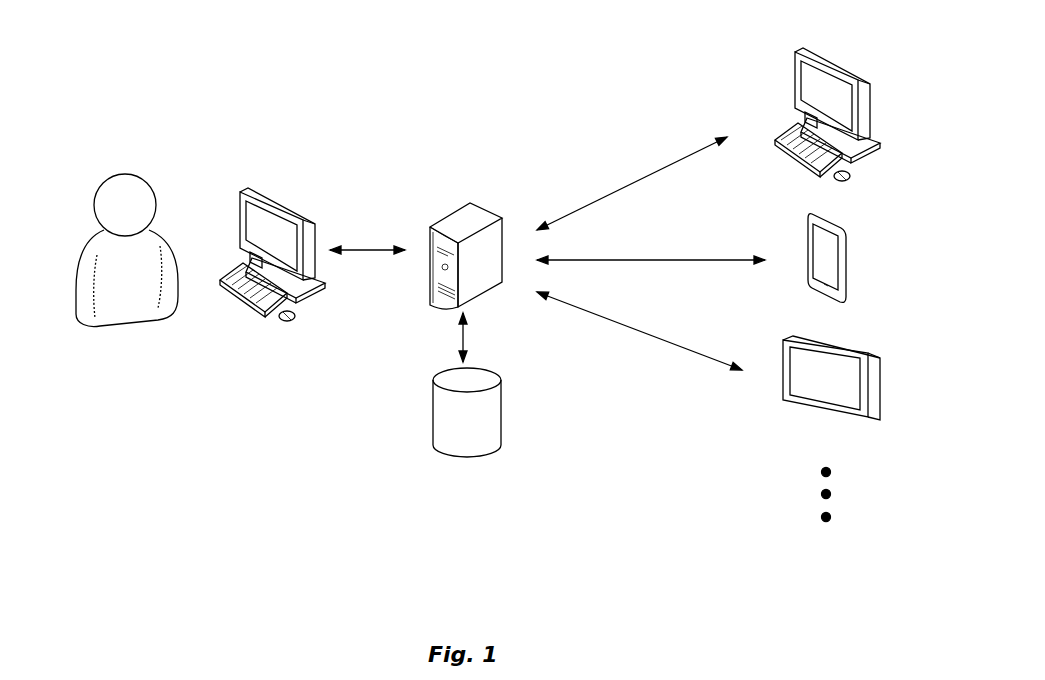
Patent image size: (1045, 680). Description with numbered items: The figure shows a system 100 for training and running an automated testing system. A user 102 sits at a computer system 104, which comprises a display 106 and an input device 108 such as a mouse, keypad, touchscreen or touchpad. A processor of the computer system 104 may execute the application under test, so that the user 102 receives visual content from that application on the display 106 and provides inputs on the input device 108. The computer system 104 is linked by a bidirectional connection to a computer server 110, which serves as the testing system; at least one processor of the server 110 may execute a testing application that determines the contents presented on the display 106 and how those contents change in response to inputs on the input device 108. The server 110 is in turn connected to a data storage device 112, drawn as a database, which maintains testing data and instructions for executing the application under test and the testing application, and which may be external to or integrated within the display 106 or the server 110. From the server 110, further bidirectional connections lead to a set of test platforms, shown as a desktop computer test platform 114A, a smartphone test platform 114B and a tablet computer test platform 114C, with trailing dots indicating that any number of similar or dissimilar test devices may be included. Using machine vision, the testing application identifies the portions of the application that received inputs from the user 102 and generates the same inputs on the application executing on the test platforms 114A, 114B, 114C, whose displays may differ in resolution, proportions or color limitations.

The system 100 is at (85, 60).
The user 102 is at (147, 192).
The computer system 104 is at (343, 133).
The display 106 is at (260, 222).
The input device 108 is at (268, 316).
The computer server 110 is at (495, 211).
The data storage device 112 is at (497, 410).
The test platform 114A is at (868, 97).
The test platform 114B is at (848, 258).
The test platform 114C is at (880, 380).